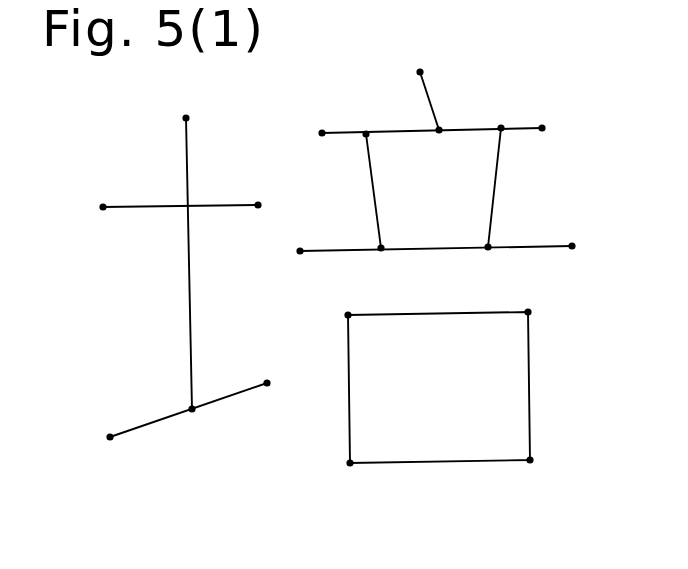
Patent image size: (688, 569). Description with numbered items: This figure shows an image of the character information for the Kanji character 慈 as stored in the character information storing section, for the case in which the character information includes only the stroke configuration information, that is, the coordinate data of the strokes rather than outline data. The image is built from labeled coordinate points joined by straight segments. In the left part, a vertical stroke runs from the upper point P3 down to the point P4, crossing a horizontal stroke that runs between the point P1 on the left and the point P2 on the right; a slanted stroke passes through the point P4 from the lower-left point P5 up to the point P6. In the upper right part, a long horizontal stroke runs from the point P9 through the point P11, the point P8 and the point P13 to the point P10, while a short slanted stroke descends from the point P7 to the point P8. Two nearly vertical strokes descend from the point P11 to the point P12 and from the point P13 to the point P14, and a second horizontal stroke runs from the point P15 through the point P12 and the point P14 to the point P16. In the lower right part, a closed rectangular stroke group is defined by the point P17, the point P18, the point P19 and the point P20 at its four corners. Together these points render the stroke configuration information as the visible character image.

The point P1 is at (102, 196).
The point P2 is at (257, 195).
The point P3 is at (186, 106).
The point P4 is at (193, 424).
The point P5 is at (112, 451).
The point P6 is at (271, 398).
The point P7 is at (423, 61).
The point P8 is at (438, 141).
The point P9 is at (319, 121).
The point P10 is at (553, 116).
The point P11 is at (370, 122).
The point P12 is at (383, 260).
The point P13 is at (491, 116).
The point P14 is at (488, 260).
The point P15 is at (300, 240).
The point P16 is at (568, 233).
The point P17 is at (345, 304).
The point P18 is at (525, 302).
The point P19 is at (531, 472).
The point P20 is at (349, 475).